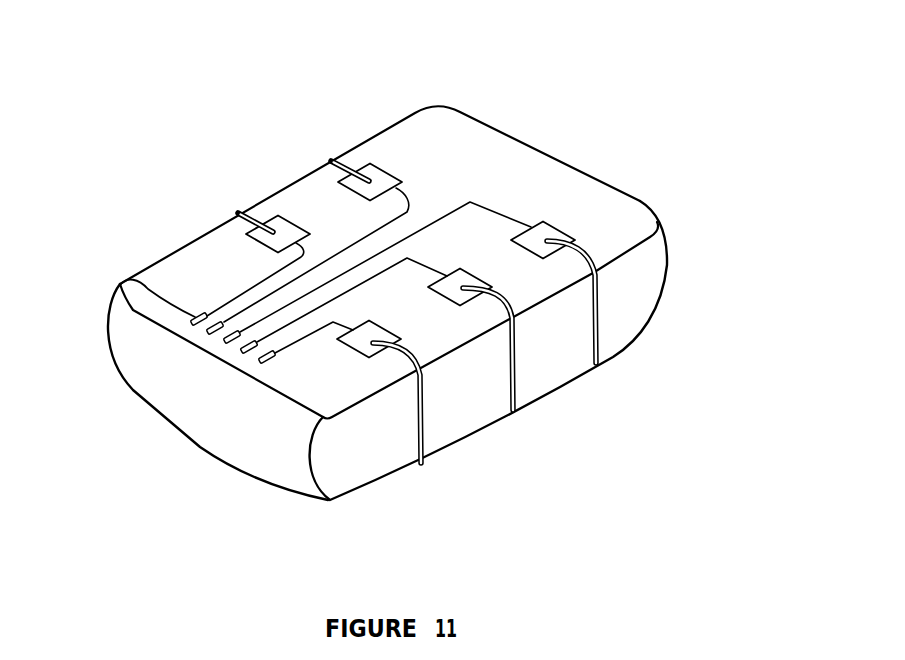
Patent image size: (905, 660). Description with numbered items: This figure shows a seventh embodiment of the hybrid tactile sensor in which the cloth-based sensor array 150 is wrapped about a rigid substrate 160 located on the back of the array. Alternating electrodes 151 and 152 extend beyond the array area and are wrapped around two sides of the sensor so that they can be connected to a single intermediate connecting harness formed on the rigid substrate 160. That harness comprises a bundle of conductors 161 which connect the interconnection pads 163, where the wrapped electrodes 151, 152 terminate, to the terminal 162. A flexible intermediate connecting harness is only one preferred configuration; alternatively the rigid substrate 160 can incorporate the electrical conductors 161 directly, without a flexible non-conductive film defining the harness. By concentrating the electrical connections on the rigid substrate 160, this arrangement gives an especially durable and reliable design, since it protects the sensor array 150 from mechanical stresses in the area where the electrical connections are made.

The cloth-based sensor array 150 is at (200, 415).
The alternating electrode 151 is at (598, 322).
The alternating electrode 152 is at (332, 158).
The rigid substrate 160 is at (632, 211).
The bundle of conductors 161 is at (470, 201).
The terminal 162 is at (120, 284).
The interconnection pad 163 is at (383, 171).